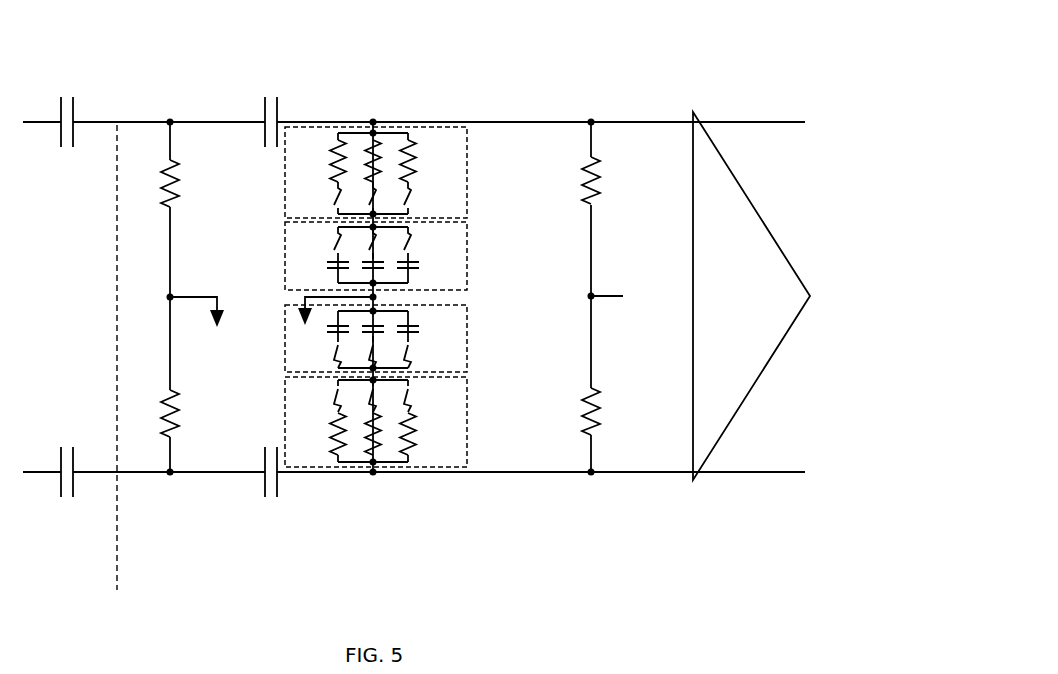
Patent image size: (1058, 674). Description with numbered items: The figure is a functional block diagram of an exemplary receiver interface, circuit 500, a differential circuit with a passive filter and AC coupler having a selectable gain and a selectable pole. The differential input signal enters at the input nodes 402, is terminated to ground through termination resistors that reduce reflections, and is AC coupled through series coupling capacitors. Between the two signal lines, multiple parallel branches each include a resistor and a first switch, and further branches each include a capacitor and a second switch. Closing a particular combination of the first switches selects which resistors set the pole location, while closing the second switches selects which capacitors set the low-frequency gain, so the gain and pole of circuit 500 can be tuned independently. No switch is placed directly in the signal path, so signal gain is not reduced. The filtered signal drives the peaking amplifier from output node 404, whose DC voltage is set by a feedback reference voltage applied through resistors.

The receiver interface circuit 500 is at (108, 46).
The differential input terminals 402 is at (190, 121).
The output node 404 is at (540, 121).